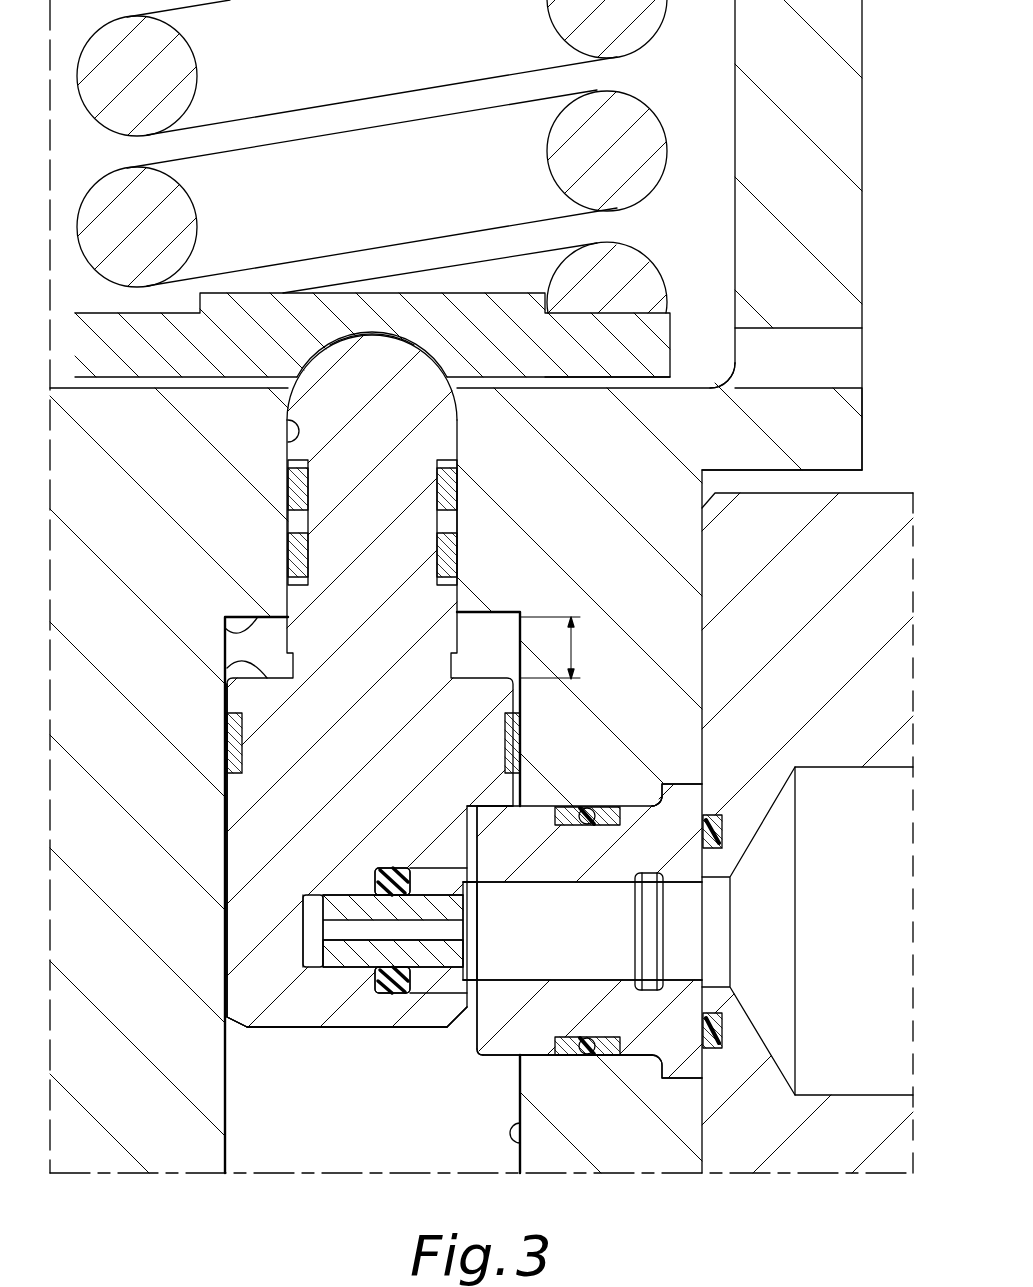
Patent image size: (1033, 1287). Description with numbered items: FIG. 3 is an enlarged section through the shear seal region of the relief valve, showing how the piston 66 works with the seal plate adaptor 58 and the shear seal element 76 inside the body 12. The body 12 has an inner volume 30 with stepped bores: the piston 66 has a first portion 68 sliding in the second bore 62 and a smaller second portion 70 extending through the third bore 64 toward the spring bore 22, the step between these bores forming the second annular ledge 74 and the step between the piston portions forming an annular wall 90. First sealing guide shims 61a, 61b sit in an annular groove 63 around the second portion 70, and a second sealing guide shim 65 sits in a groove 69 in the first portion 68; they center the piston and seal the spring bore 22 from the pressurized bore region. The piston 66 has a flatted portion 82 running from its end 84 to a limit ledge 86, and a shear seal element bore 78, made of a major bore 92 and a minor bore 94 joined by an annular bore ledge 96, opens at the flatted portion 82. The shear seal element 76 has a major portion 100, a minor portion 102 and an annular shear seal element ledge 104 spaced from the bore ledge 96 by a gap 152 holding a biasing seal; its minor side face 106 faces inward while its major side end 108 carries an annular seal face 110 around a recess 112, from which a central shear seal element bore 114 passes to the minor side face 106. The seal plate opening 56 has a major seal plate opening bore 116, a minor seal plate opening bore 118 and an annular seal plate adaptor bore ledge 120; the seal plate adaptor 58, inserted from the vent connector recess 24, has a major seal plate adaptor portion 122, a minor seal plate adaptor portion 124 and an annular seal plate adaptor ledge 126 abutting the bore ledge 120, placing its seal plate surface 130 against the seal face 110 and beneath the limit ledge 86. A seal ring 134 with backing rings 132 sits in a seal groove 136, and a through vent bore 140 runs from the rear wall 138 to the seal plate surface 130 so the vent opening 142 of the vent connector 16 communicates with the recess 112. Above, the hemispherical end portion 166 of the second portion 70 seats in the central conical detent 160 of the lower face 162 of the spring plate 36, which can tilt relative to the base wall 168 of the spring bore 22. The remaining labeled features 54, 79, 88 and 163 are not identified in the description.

The body 12 is at (865, 424).
The vent connector 16 is at (890, 503).
The spring bore 22 is at (735, 193).
The vent connector recess 24 is at (752, 480).
The inner volume 30 is at (385, 1142).
The spring plate 36 is at (260, 300).
The slot 54 is at (848, 362).
The seal plate opening 56 is at (545, 1055).
The seal plate adaptor 58 is at (643, 1045).
The first sealing guide shim 61a is at (457, 482).
The first sealing guide shim 61b is at (457, 550).
The second bore 62 is at (520, 1127).
The annular groove 63 is at (453, 523).
The third bore 64 is at (287, 428).
The second sealing guide shim 65 is at (521, 742).
The piston 66 is at (280, 825).
The first portion 68 is at (243, 853).
The groove 69 is at (521, 715).
The second portion 70 is at (430, 440).
The second annular ledge 74 is at (226, 630).
The shear seal element 76 is at (347, 895).
The shear seal element bore 78 is at (318, 938).
The seal seat 79 is at (368, 887).
The flatted portion 82 is at (478, 837).
The end 84 is at (280, 1032).
The limit ledge 86 is at (468, 824).
The gap 88 is at (576, 648).
The annular wall 90 is at (227, 667).
The major bore 92 is at (467, 967).
The minor bore 94 is at (323, 953).
The annular bore ledge 96 is at (385, 995).
The major portion 100 is at (428, 985).
The minor portion 102 is at (353, 1005).
The annular shear seal element ledge 104 is at (378, 880).
The minor side face 106 is at (320, 907).
The major side end 108 is at (460, 875).
The annular seal face 110 is at (478, 873).
The recess 112 is at (470, 930).
The central shear seal element bore 114 is at (348, 930).
The major seal plate opening bore 116 is at (706, 800).
The minor seal plate opening bore 118 is at (589, 931).
The annular seal plate adaptor bore ledge 120 is at (662, 1068).
The major seal plate adaptor portion 122 is at (673, 793).
The minor seal plate adaptor portion 124 is at (507, 1043).
The annular seal plate adaptor ledge 126 is at (657, 790).
The seal plate surface 130 is at (473, 1037).
The backing rings 132 is at (607, 827).
The seal ring 134 is at (593, 806).
The seal groove 136 is at (563, 1056).
The rear wall 138 is at (705, 863).
The through vent bore 140 is at (603, 953).
The vent opening 142 is at (890, 946).
The gap 152 is at (390, 867).
The central conical detent 160 is at (380, 347).
The lower face 162 is at (586, 378).
The plunger tip 163 is at (365, 332).
The hemispherical end portion 166 is at (412, 378).
The base wall 168 is at (688, 386).